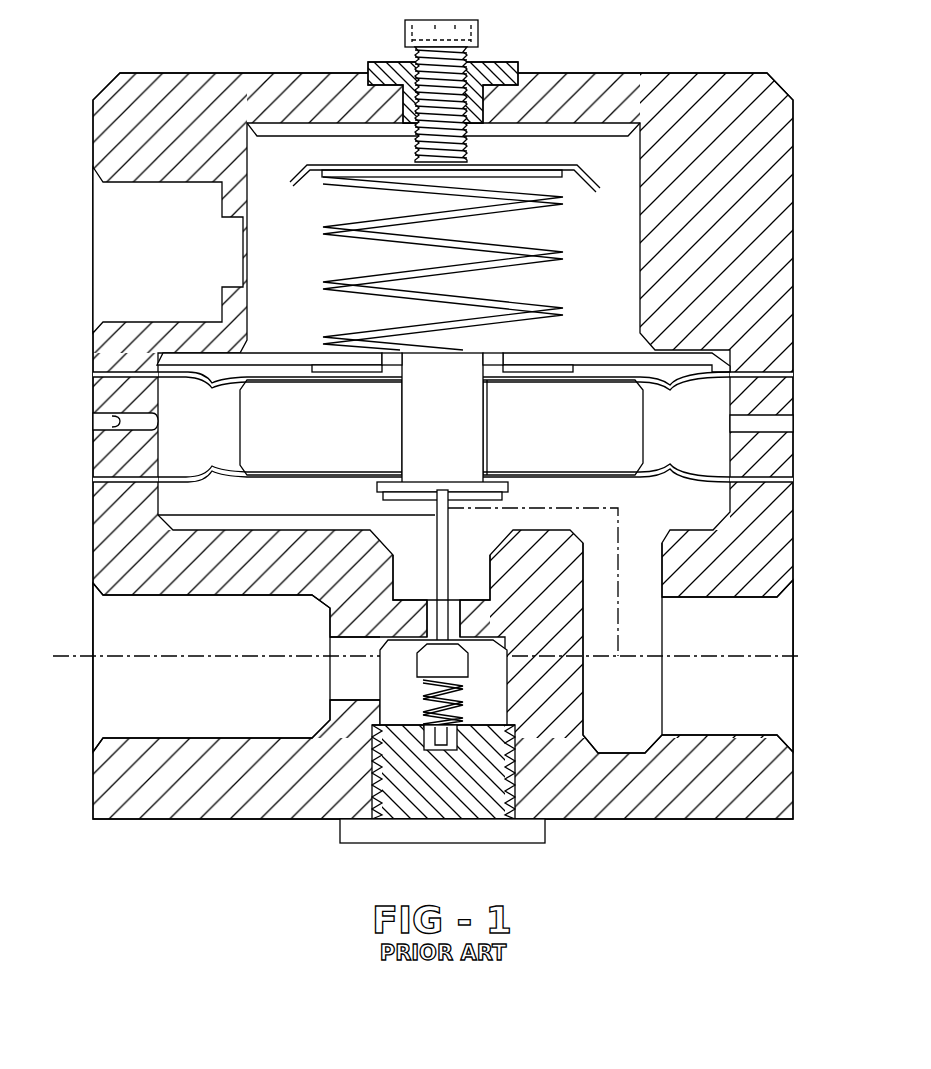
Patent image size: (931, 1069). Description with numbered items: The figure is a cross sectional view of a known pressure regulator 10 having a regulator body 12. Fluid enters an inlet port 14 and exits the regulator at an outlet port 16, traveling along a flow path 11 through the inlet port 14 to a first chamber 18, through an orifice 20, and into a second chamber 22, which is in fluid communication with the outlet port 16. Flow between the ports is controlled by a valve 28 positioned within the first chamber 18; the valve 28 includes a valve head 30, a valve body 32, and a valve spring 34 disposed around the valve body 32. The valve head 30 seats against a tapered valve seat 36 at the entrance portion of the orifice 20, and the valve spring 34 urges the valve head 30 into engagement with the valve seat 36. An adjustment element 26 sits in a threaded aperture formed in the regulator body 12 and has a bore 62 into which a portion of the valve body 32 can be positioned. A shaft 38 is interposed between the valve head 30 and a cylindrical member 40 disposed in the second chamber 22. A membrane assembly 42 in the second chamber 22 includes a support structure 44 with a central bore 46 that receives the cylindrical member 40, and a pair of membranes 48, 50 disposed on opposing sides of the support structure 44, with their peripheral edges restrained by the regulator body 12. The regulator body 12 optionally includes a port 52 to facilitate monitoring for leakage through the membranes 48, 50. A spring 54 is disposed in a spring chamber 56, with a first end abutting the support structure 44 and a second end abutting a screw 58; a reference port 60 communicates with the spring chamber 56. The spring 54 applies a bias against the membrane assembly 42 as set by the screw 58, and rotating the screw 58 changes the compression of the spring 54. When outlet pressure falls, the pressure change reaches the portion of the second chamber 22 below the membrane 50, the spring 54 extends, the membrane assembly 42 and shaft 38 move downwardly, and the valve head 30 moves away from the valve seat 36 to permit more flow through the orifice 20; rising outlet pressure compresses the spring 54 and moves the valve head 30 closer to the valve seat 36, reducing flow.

The pressure regulator 10 is at (697, 60).
The flow path 11 is at (93, 656).
The regulator body 12 is at (780, 243).
The inlet port 14 is at (117, 690).
The outlet port 16 is at (758, 682).
The first chamber 18 is at (403, 673).
The orifice 20 is at (427, 613).
The second chamber 22 is at (187, 453).
The adjustment element 26 is at (513, 833).
The valve 28 is at (421, 692).
The valve head 30 is at (417, 660).
The valve body 32 is at (447, 733).
The valve spring 34 is at (463, 712).
The valve seat 36 is at (467, 635).
The shaft 38 is at (443, 550).
The cylindrical member 40 is at (430, 397).
The membrane assembly 42 is at (697, 412).
The support structure 44 is at (615, 430).
The central bore 46 is at (487, 432).
The membrane 48 is at (190, 380).
The membrane 50 is at (173, 481).
The port 52 is at (120, 416).
The spring 54 is at (525, 243).
The spring chamber 56 is at (262, 157).
The screw 58 is at (440, 97).
The reference port 60 is at (147, 183).
The bore 62 is at (432, 746).